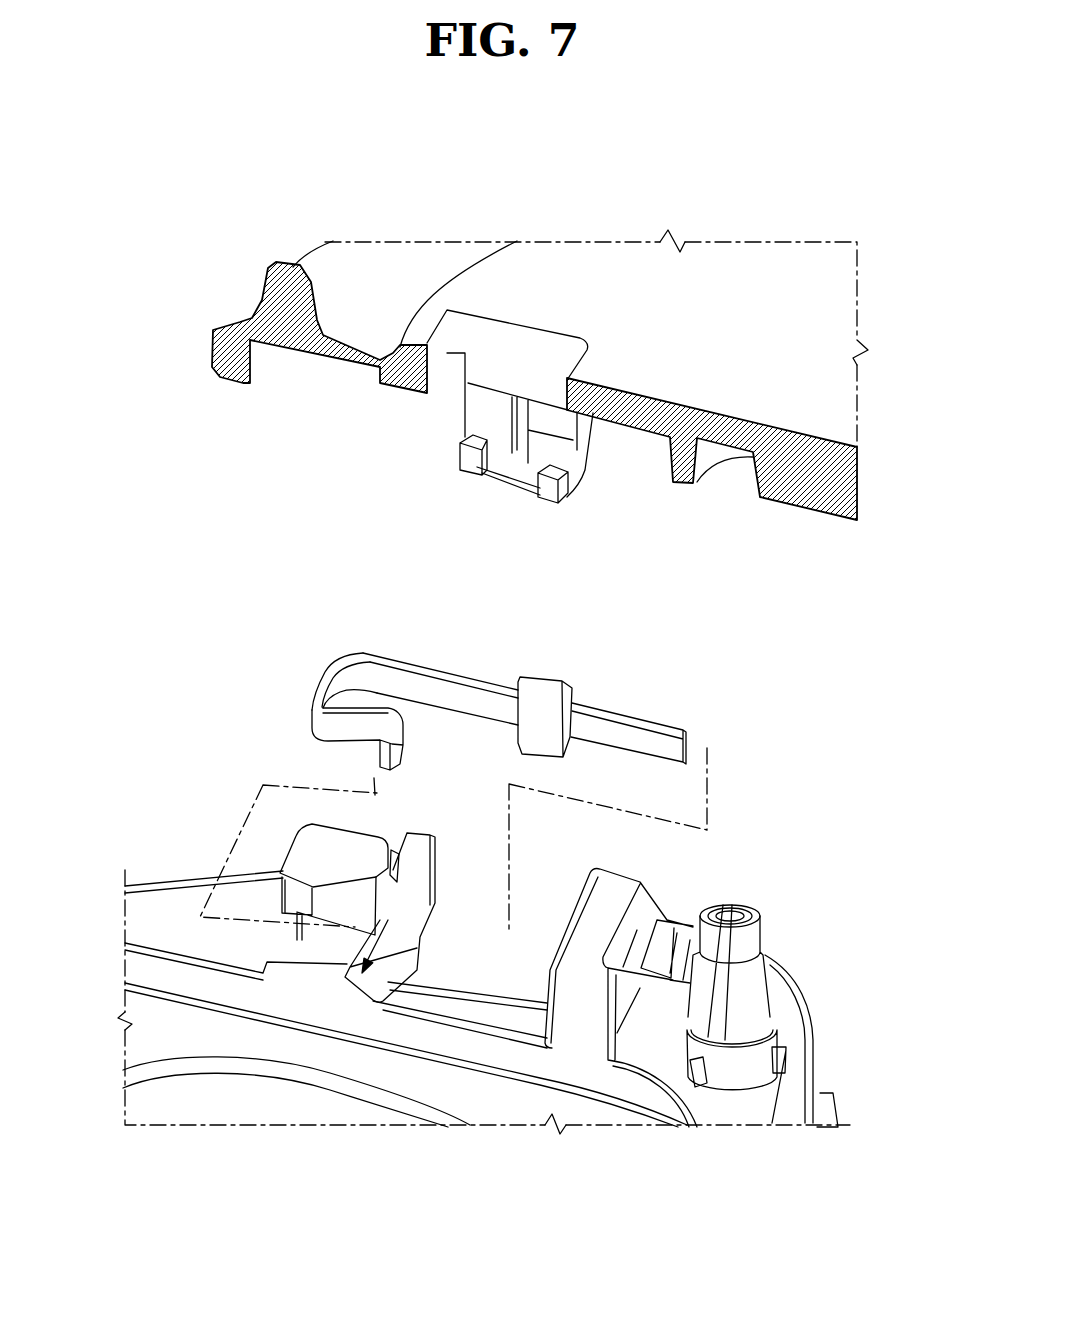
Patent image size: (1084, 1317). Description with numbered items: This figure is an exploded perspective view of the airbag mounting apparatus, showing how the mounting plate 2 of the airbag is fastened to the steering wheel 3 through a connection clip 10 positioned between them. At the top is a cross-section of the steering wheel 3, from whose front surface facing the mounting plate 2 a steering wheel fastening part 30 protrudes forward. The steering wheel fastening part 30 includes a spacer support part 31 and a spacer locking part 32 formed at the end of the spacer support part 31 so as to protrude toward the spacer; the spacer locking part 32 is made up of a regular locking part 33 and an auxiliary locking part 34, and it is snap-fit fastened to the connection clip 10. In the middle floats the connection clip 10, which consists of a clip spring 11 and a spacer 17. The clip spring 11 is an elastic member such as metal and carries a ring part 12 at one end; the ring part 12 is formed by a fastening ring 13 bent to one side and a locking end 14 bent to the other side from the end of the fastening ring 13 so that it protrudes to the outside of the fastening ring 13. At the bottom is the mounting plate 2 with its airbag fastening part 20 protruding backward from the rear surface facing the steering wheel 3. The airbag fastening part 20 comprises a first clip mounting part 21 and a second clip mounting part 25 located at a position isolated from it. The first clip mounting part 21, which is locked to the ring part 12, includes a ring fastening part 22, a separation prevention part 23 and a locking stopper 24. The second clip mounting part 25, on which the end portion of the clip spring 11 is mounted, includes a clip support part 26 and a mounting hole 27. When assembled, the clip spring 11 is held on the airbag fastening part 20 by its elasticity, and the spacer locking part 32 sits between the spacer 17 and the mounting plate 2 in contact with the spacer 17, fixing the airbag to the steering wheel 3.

The mounting plate 2 is at (527, 1108).
The steering wheel 3 is at (797, 322).
The connection clip 10 is at (477, 669).
The clip spring 11 is at (500, 676).
The ring part 12 is at (334, 669).
The fastening ring 13 is at (347, 728).
The locking end 14 is at (375, 728).
The spacer 17 is at (551, 687).
The airbag fastening part 20 is at (488, 993).
The first clip mounting part 21 is at (327, 950).
The ring fastening part 22 is at (353, 915).
The separation prevention part 23 is at (355, 847).
The locking stopper 24 is at (302, 958).
The second clip mounting part 25 is at (558, 1003).
The clip support part 26 is at (603, 916).
The mounting hole 27 is at (605, 967).
The steering wheel fastening part 30 is at (499, 461).
The spacer support part 31 is at (485, 403).
The spacer locking part 32 is at (479, 523).
The regular locking part 33 is at (515, 490).
The auxiliary locking part 34 is at (467, 468).